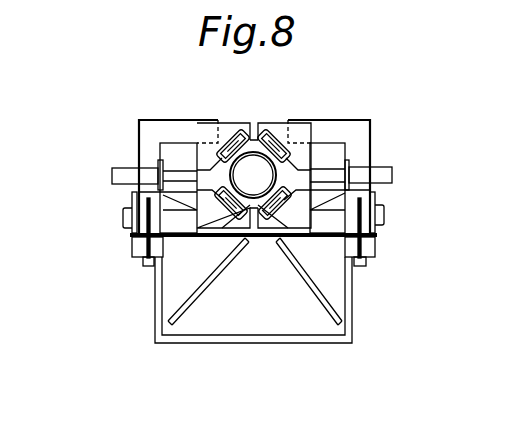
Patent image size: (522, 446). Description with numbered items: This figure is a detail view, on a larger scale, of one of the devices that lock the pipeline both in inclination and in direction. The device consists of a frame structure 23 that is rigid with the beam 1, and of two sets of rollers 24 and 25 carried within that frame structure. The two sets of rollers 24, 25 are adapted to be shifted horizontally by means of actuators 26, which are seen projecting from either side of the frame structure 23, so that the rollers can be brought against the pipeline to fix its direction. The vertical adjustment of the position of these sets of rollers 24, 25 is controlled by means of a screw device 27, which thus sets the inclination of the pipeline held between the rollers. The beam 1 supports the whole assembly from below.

The beam 1 is at (353, 337).
The frame structure 23 is at (371, 135).
The set of rollers 24 is at (218, 224).
The set of rollers 25 is at (277, 130).
The actuators 26 is at (122, 178).
The screw device 27 is at (132, 242).